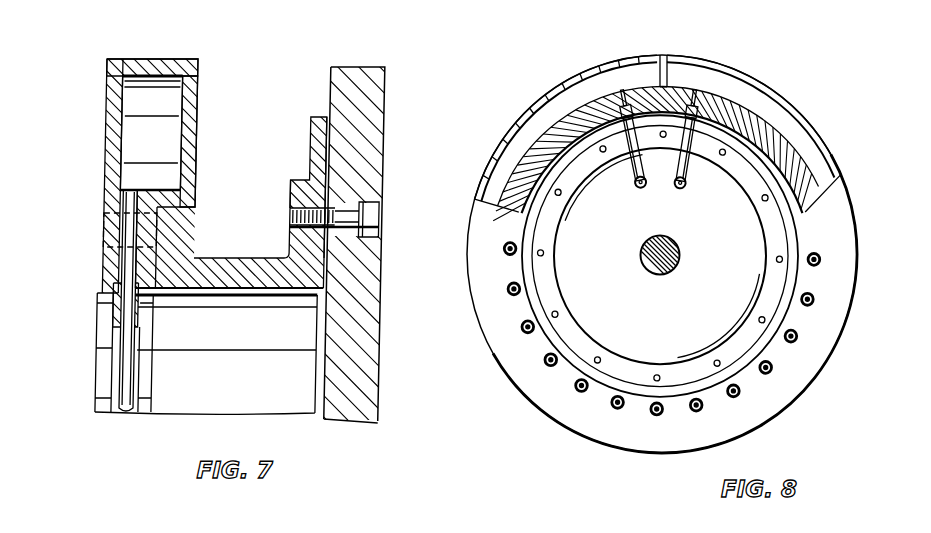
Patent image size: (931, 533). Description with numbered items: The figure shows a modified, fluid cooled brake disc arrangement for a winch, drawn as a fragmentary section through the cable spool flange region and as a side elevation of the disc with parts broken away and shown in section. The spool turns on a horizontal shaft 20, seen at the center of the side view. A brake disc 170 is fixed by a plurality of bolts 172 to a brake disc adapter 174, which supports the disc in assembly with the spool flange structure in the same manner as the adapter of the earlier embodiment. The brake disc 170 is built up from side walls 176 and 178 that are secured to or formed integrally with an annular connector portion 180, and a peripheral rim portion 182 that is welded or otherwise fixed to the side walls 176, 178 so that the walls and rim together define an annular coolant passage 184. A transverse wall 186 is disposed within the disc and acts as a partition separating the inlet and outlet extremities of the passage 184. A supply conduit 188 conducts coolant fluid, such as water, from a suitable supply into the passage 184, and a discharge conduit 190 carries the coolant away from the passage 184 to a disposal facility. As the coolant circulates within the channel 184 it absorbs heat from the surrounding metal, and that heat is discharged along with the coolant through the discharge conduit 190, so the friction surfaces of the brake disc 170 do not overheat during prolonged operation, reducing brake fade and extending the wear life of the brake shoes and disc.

In FIG. 8, the shaft 20 is at (658, 271).
In FIG. 7, the brake disc 170 is at (150, 52).
In FIG. 7, the bolts 172 is at (116, 224).
In FIG. 7, the brake disc adapter 174 is at (309, 158).
In FIG. 7, the side wall 176 is at (110, 112).
In FIG. 7, the side wall 178 is at (198, 115).
In FIG. 7, the annular connector portion 180 is at (112, 280).
In FIG. 7, the peripheral rim portion 182 is at (182, 63).
In FIG. 7, the annular coolant passage 184 is at (144, 140).
In FIG. 8, the annular coolant passage 184 is at (768, 112).
In FIG. 8, the transverse wall 186 is at (670, 73).
In FIG. 8, the supply conduit 188 is at (633, 176).
In FIG. 8, the discharge conduit 190 is at (690, 174).